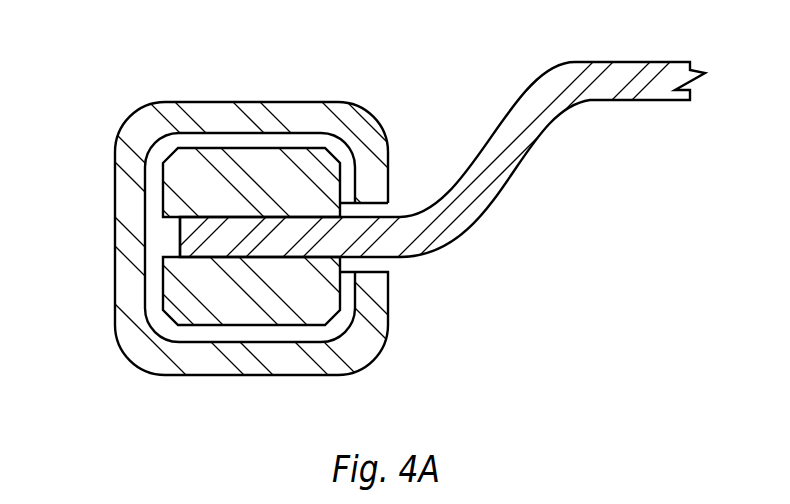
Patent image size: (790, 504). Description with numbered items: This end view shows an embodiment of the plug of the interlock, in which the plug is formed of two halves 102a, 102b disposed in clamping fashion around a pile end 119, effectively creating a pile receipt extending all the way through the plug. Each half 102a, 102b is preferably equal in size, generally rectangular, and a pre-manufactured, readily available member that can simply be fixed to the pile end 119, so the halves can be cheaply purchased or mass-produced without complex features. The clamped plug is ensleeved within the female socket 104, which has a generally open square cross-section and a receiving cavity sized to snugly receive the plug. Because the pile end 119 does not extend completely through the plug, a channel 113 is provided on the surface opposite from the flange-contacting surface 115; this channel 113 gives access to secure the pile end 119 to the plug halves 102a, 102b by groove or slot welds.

The female socket 104 is at (366, 112).
The flange-contacting surface 115 is at (340, 188).
The first plug half 102a is at (245, 158).
The second plug half 102b is at (250, 312).
The pile end 119 is at (433, 228).
The channel 113 is at (167, 233).